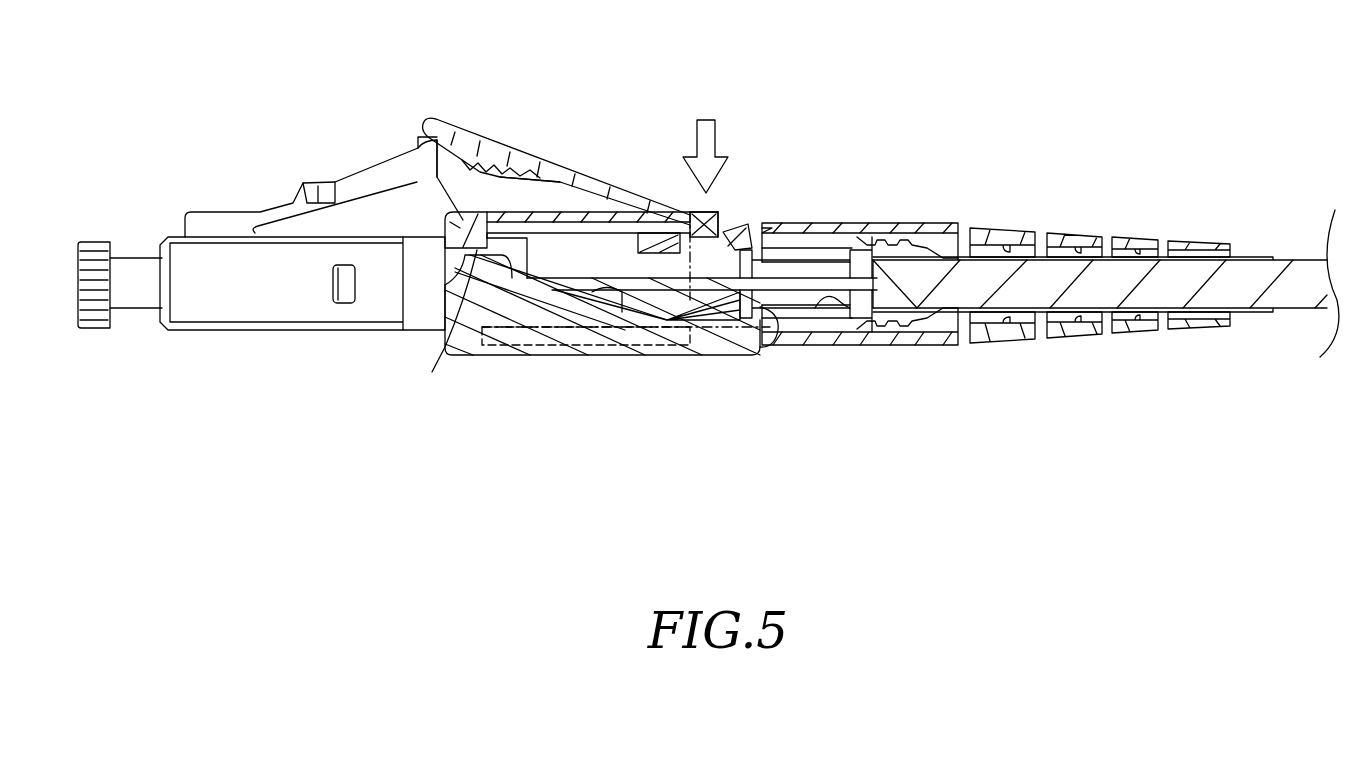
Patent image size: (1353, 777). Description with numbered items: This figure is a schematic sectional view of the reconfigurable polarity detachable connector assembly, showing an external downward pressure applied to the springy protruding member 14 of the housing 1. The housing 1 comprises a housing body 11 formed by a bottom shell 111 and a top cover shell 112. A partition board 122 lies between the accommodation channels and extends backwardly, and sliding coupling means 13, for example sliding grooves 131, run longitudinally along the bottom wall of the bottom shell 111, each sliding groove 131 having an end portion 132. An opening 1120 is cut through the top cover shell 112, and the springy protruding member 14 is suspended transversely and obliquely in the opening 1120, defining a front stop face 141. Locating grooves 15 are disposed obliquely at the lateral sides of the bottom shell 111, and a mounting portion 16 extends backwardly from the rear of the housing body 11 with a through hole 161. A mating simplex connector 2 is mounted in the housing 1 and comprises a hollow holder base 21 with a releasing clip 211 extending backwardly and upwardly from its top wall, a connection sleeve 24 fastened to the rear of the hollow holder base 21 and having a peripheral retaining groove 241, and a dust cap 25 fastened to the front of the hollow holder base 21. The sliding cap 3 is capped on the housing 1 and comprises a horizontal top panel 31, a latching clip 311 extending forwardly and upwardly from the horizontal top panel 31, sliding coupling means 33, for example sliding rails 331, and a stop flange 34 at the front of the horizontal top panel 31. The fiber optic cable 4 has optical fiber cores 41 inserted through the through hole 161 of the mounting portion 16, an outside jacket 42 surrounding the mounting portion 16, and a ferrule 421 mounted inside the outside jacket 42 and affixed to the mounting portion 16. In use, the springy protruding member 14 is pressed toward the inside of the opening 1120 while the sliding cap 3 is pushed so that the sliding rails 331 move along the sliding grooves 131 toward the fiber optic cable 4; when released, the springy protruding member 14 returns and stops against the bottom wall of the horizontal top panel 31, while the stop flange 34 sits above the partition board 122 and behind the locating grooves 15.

The housing 1 is at (790, 503).
The mating simplex connector 2 is at (238, 180).
The sliding cap 3 is at (440, 100).
The fiber optic cable 4 is at (987, 268).
The housing body 11 is at (737, 427).
The sliding coupling means 13 is at (680, 420).
The springy protruding member 14 is at (702, 223).
The locating groove 15 is at (612, 298).
The mounting portion 16 is at (800, 313).
The hollow holder base 21 is at (263, 303).
The connection sleeve 24 is at (420, 317).
The dust cap 25 is at (133, 292).
The horizontal top panel 31 is at (497, 217).
The sliding coupling means 33 is at (516, 438).
The stop flange 34 is at (463, 222).
The optical fiber core 41 is at (782, 283).
The outside jacket 42 is at (925, 227).
The bottom shell 111 is at (716, 348).
The top cover shell 112 is at (652, 235).
The partition board 122 is at (567, 313).
The sliding groove 131 is at (673, 345).
The end portion 132 is at (477, 347).
The front stop face 141 is at (693, 220).
The through hole 161 is at (837, 302).
The releasing clip 211 is at (360, 182).
The peripheral retaining groove 241 is at (468, 352).
The latching clip 311 is at (518, 170).
The sliding rail 331 is at (527, 350).
The ferrule 421 is at (833, 238).
The opening 1120 is at (725, 233).